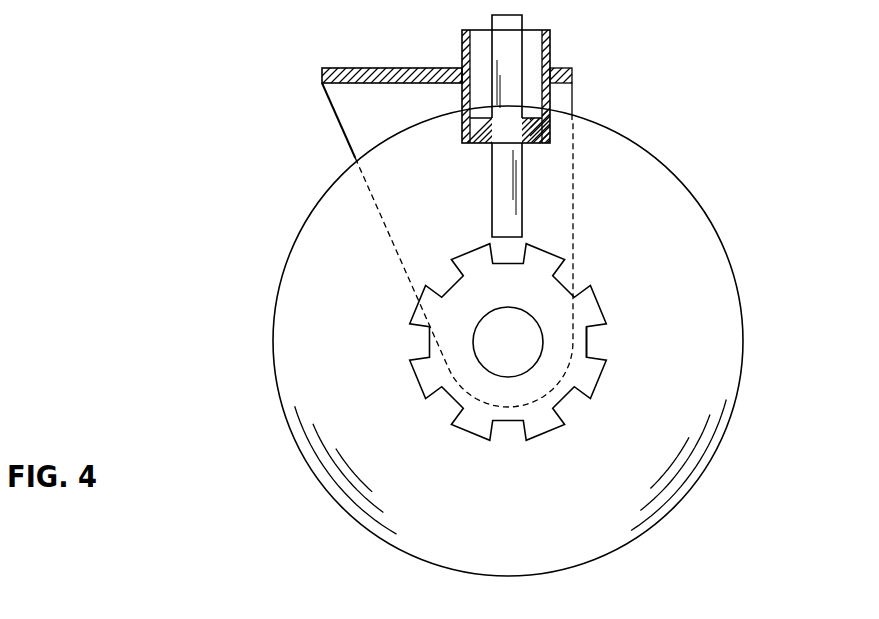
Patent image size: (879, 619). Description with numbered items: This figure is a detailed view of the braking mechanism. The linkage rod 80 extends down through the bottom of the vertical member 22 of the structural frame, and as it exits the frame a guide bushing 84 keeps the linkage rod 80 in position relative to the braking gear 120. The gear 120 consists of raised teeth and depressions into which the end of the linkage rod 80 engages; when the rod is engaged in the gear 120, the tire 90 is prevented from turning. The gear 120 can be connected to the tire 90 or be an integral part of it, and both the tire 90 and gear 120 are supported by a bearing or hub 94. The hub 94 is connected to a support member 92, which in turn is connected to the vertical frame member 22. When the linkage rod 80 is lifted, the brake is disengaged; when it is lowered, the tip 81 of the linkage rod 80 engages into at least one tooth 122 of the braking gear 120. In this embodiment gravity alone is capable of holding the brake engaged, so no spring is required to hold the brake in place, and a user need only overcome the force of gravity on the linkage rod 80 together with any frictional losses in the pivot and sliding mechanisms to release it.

The vertical member 22 is at (464, 96).
The linkage rod 80 is at (522, 102).
The tip 81 is at (523, 223).
The guide bushing 84 is at (549, 115).
The tire 90 is at (732, 260).
The support member 92 is at (382, 223).
The hub 94 is at (477, 365).
The braking gear 120 is at (610, 378).
The tooth 122 is at (595, 343).